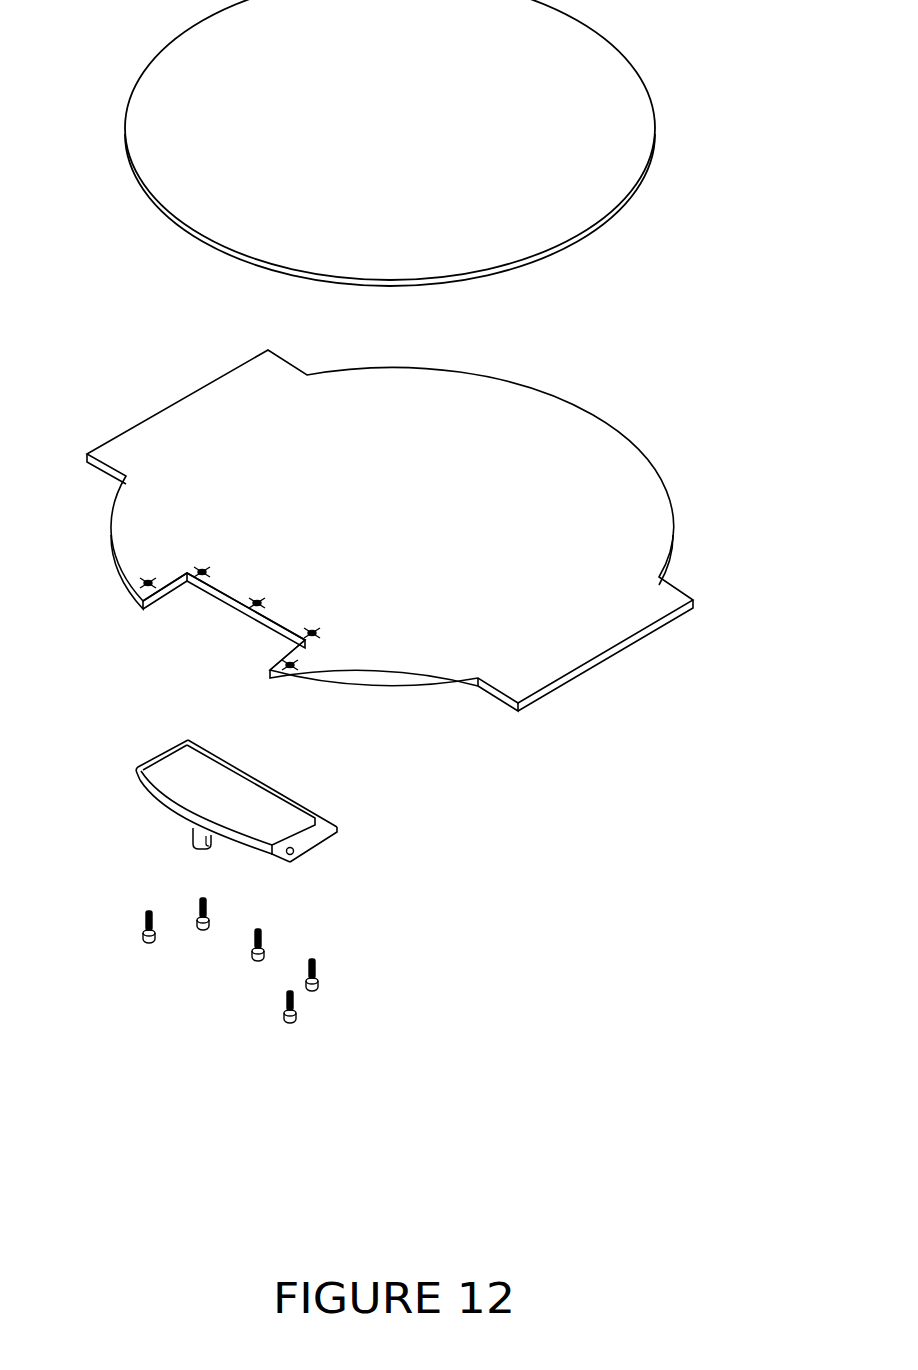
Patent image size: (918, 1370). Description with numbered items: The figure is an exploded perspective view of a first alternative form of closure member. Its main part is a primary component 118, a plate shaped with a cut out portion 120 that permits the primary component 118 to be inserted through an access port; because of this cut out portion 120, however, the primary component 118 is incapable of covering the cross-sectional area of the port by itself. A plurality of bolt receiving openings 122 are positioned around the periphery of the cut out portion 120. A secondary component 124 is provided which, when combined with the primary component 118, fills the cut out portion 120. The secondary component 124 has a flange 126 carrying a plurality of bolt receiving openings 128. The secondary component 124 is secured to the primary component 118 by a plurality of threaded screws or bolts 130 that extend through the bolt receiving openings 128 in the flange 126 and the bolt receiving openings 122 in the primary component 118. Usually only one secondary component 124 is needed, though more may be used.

The primary component 118 is at (375, 524).
The cut out portion 120 is at (190, 622).
The bolt receiving openings 122 is at (306, 671).
The secondary component 124 is at (192, 780).
The flange 126 is at (367, 827).
The bolt receiving openings 128 is at (357, 884).
The threaded screws or bolts 130 is at (280, 1001).